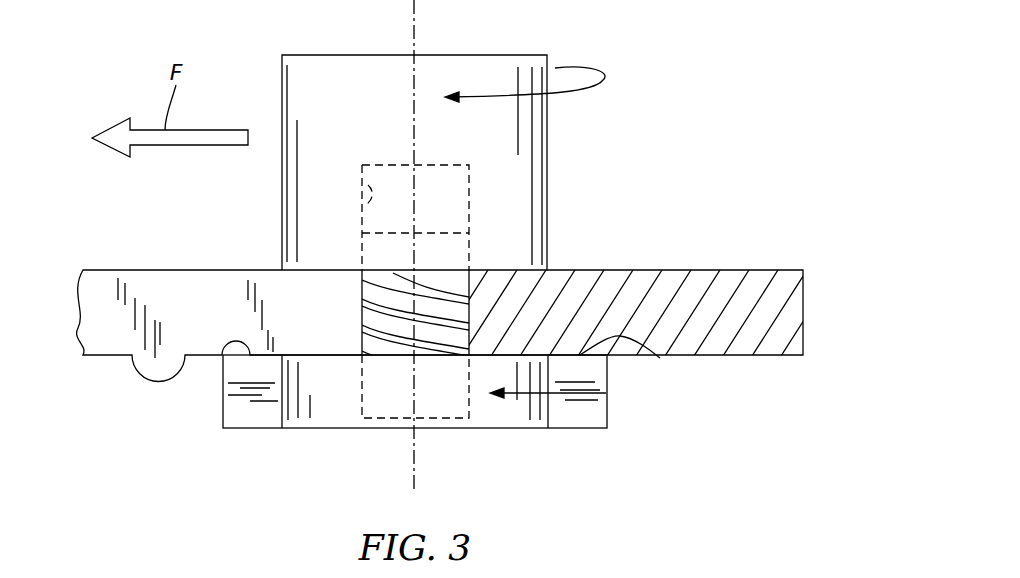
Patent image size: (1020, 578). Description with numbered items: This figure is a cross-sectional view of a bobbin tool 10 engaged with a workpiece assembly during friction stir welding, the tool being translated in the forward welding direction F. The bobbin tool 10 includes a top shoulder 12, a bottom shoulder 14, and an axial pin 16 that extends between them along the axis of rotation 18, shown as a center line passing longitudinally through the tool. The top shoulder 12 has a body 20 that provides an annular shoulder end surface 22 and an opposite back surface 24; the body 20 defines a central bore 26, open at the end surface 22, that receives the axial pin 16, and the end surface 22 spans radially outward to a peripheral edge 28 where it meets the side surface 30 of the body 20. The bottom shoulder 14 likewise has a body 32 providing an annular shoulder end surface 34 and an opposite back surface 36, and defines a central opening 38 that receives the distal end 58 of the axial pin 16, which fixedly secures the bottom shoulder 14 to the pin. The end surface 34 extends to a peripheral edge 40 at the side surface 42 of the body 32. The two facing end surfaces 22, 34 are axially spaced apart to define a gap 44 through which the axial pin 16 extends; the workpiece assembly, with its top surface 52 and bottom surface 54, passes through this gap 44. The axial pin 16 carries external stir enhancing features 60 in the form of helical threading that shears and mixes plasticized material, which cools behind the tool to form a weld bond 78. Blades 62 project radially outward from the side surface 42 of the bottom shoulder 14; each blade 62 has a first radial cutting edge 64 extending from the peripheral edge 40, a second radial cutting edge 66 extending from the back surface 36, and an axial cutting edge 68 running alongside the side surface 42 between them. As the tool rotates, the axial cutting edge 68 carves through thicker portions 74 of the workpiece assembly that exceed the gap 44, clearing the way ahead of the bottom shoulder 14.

The bobbin tool 10 is at (650, 148).
The top shoulder 12 is at (556, 131).
The bottom shoulder 14 is at (562, 411).
The axial pin 16 is at (458, 328).
The axis of rotation 18 is at (416, 8).
The body 20 is at (527, 171).
The annular shoulder end surface 22 is at (305, 270).
The back surface 24 is at (503, 55).
The central bore 26 is at (370, 208).
The peripheral edge 28 is at (588, 270).
The side surface 30 is at (549, 206).
The body 32 is at (353, 428).
The annular shoulder end surface 34 is at (300, 354).
The back surface 36 is at (493, 429).
The central opening 38 is at (362, 372).
The peripheral edge 40 is at (547, 429).
The side surface 42 is at (555, 388).
The gap 44 is at (328, 280).
The top surface 52 is at (147, 270).
The bottom surface 54 is at (97, 357).
The distal end 58 is at (447, 420).
The external stir enhancing features 60 is at (445, 280).
The blade 62 is at (237, 413).
The first radial cutting edge 64 is at (225, 350).
The second radial cutting edge 66 is at (253, 428).
The axial cutting edge 68 is at (220, 417).
The thicker portions 74 is at (143, 375).
The weld bond 78 is at (718, 292).